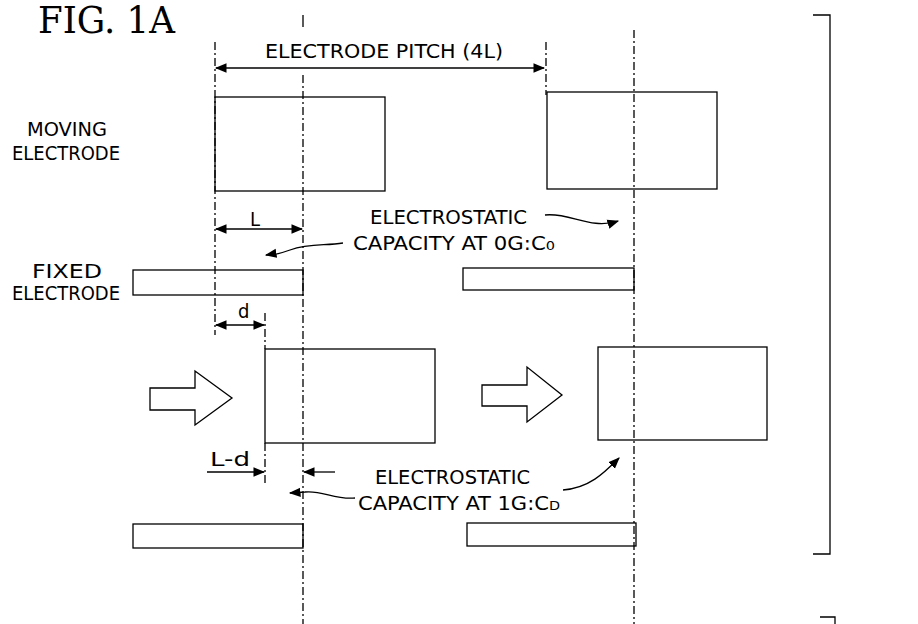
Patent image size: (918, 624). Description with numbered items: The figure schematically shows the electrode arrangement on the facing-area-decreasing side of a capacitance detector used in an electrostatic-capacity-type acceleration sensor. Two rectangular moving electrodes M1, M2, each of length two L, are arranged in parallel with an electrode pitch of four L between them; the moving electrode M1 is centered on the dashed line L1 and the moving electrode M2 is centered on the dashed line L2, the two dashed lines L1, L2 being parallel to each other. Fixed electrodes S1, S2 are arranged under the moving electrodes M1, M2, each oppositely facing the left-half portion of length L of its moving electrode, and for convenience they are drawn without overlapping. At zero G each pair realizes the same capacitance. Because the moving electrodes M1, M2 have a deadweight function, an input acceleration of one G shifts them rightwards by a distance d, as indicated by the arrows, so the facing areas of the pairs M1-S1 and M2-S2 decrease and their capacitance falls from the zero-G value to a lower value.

The moving electrode M1 is at (385, 135).
The moving electrode M2 is at (717, 130).
The fixed electrode S1 is at (163, 270).
The fixed electrode S2 is at (463, 276).
The dashed line L1 is at (306, 590).
The dashed line L2 is at (638, 588).